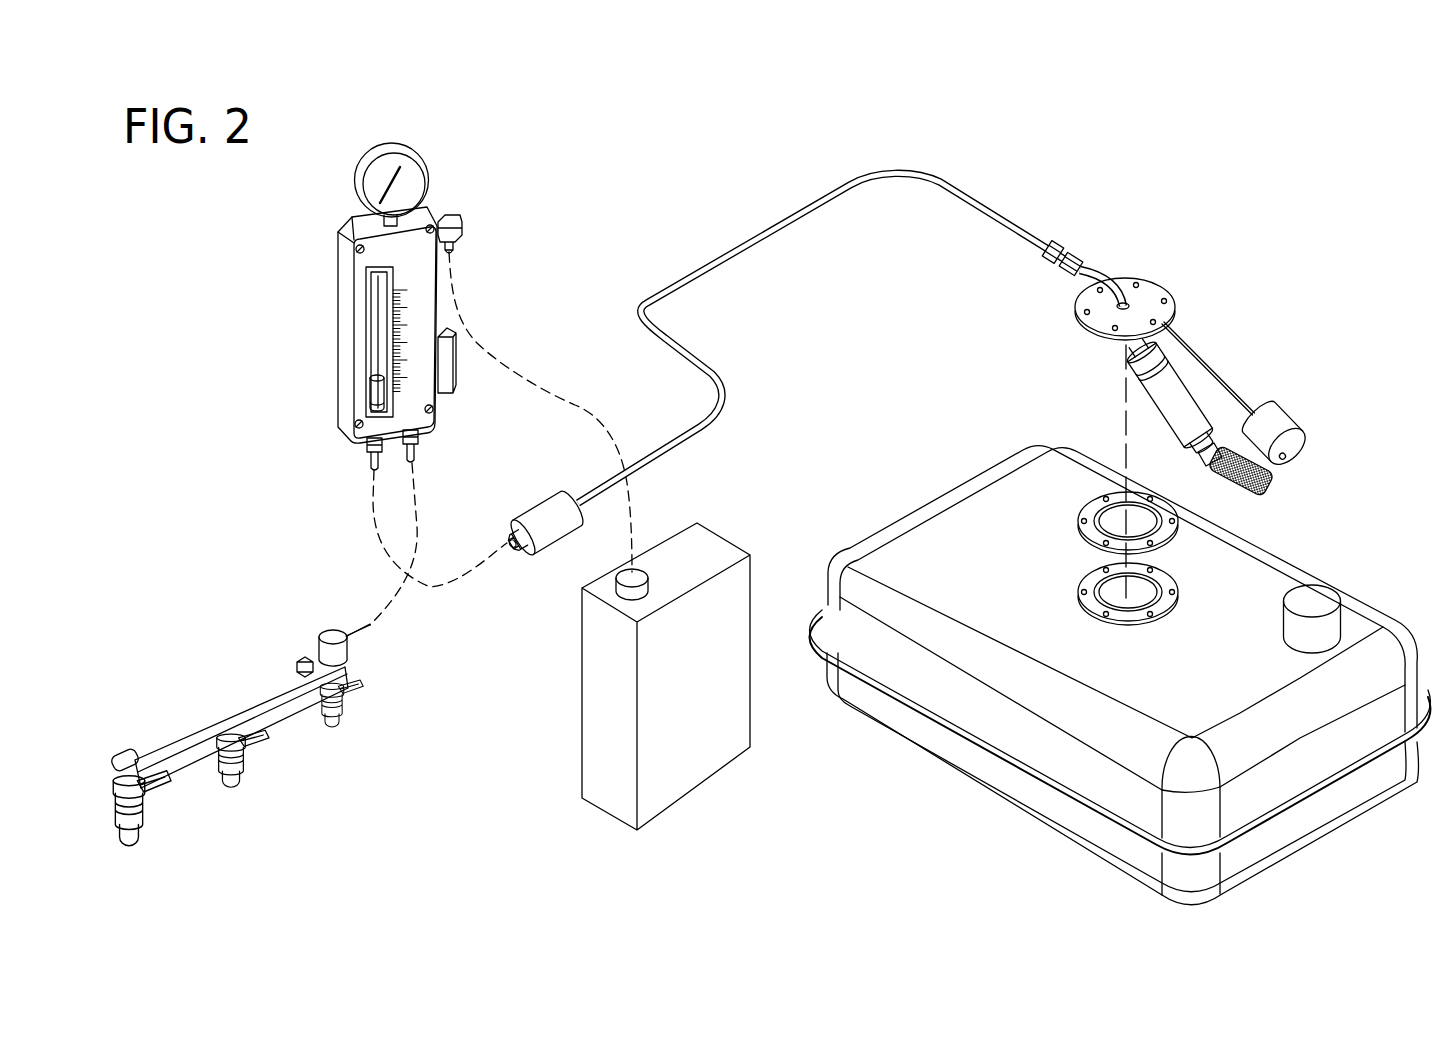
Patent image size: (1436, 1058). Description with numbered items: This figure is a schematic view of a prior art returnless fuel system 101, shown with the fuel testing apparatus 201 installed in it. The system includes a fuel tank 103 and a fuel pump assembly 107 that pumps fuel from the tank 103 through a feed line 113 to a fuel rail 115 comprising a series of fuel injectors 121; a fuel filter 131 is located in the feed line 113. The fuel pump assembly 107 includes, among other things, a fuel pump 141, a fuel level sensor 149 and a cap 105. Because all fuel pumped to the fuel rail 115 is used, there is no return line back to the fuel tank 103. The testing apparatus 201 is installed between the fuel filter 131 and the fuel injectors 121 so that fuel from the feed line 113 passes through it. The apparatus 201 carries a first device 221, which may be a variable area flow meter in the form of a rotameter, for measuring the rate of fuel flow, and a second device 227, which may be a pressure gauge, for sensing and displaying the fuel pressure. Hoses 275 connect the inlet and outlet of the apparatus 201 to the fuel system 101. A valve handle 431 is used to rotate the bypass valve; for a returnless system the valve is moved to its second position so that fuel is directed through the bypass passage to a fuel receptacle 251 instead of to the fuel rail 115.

The returnless fuel system 101 is at (1177, 350).
The fuel tank 103 is at (915, 542).
The cap 105 is at (1163, 293).
The fuel pump assembly 107 is at (1075, 332).
The feed line 113 is at (760, 238).
The fuel rail 115 is at (275, 685).
The fuel injectors 121 is at (330, 725).
The fuel filter 131 is at (552, 535).
The fuel pump 141 is at (1174, 418).
The fuel level sensor 149 is at (1283, 413).
The fuel testing apparatus 201 is at (411, 272).
The first device 221 is at (368, 320).
The second device 227 is at (402, 136).
The fuel receptacle 251 is at (699, 553).
The hose 275 is at (373, 507).
The valve handle 431 is at (457, 362).